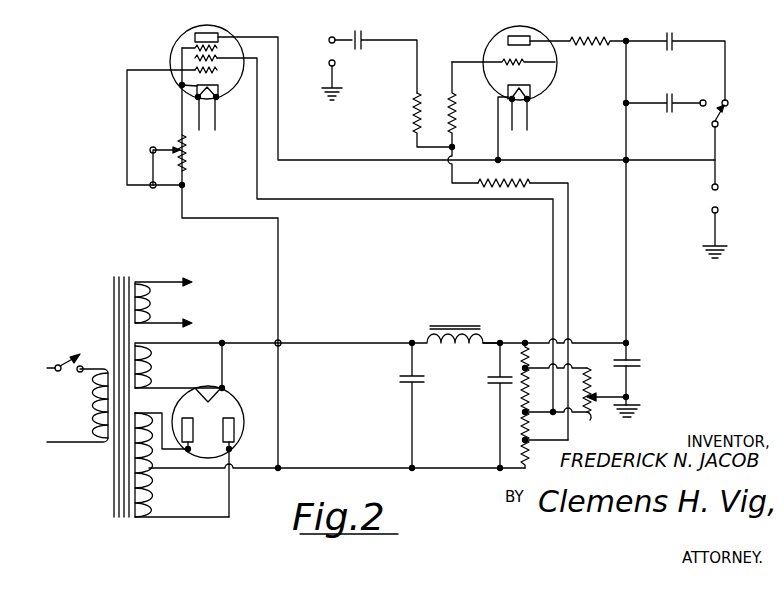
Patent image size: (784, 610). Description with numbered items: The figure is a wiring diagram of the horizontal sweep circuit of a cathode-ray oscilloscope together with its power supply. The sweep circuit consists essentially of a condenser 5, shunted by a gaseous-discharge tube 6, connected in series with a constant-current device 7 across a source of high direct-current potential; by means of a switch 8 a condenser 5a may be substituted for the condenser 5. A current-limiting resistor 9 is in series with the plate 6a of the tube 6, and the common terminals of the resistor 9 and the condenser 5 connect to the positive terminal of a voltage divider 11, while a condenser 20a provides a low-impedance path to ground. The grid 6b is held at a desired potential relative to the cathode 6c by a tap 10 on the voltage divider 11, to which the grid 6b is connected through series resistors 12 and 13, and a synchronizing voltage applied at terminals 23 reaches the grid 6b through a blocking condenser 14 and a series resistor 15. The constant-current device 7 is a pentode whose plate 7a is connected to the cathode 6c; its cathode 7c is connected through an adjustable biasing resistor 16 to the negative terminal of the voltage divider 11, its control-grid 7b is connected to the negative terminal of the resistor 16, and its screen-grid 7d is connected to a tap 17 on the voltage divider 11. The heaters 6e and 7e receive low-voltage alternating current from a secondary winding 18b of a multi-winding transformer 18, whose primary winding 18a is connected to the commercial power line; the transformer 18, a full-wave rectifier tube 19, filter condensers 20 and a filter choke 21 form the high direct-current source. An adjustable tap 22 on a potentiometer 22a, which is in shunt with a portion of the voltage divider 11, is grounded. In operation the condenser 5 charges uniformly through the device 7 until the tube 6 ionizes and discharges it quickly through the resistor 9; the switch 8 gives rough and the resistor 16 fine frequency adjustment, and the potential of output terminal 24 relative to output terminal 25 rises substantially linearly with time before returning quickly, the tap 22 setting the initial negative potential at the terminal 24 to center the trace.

The constant-current device 7 is at (182, 38).
The plate 7a is at (213, 36).
The control-grid 7b is at (195, 72).
The cathode 7c is at (221, 93).
The screen-grid 7d is at (222, 60).
The heater 7e is at (207, 124).
The adjustable biasing resistor 16 is at (168, 161).
The blocking condenser 14 is at (376, 22).
The terminals 23 is at (324, 68).
The series resistor 15 is at (399, 122).
The series resistor 13 is at (465, 104).
The gaseous-discharge tube 6 is at (497, 38).
The plate 6a is at (531, 40).
The grid 6b is at (554, 66).
The cathode 6c is at (531, 92).
The heater 6e is at (519, 125).
The current-limiting resistor 9 is at (578, 32).
The condenser 5 is at (675, 61).
The condenser 5a is at (666, 96).
The switch 8 is at (725, 113).
The output terminal 24 is at (728, 162).
The output terminal 25 is at (723, 230).
The series resistor 12 is at (542, 180).
The multi-winding transformer 18 is at (118, 453).
The primary winding 18a is at (77, 398).
The secondary winding 18b is at (170, 302).
The full-wave rectifier tube 19 is at (237, 406).
The filter choke 21 is at (466, 322).
The filter condensers 20 is at (456, 405).
The adjustable tap 22 is at (562, 392).
The voltage divider 11 is at (515, 392).
The tap 17 is at (539, 426).
The tap 10 is at (536, 454).
The potentiometer 22a is at (603, 394).
The condenser 20a is at (636, 373).